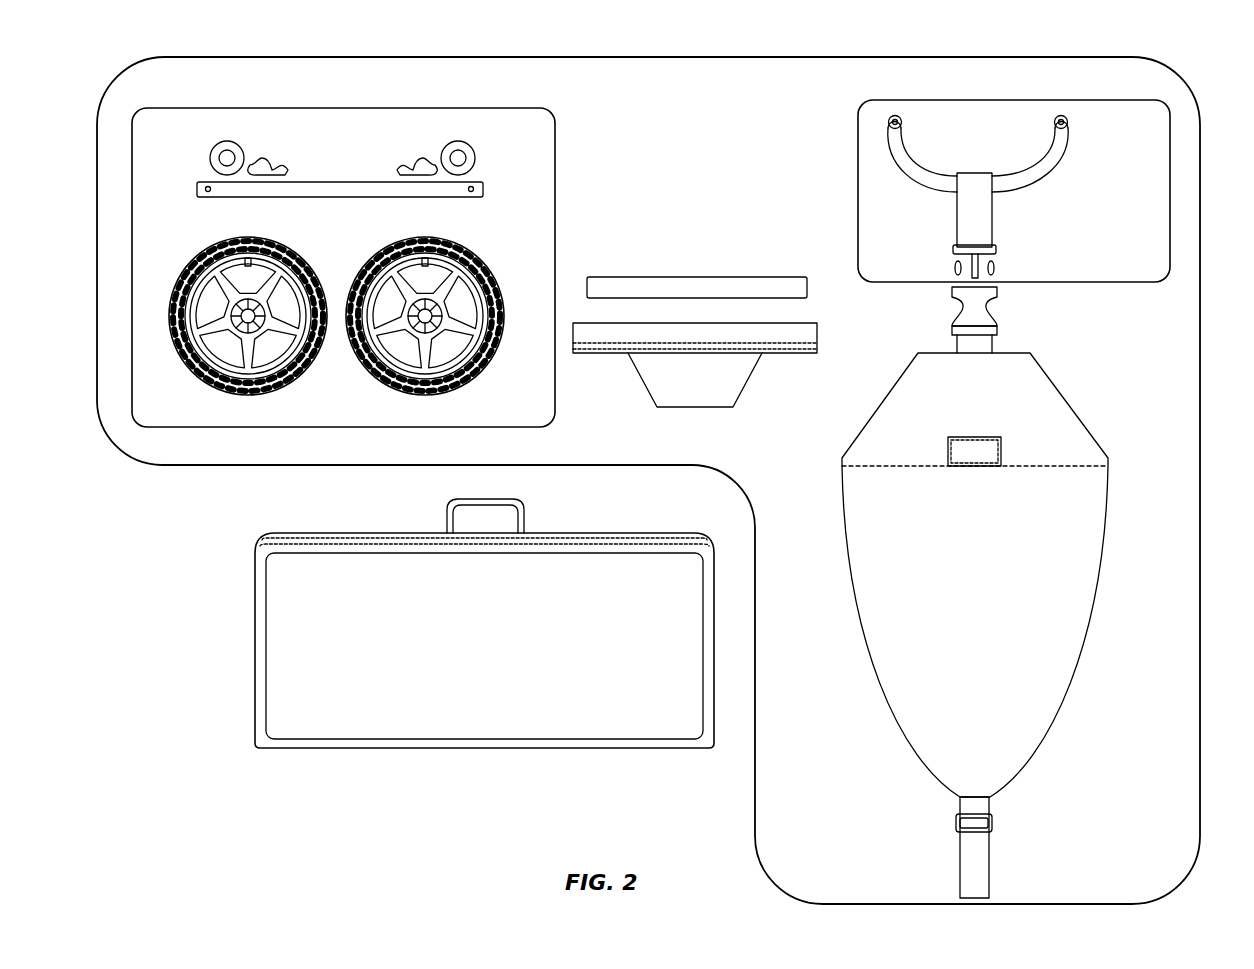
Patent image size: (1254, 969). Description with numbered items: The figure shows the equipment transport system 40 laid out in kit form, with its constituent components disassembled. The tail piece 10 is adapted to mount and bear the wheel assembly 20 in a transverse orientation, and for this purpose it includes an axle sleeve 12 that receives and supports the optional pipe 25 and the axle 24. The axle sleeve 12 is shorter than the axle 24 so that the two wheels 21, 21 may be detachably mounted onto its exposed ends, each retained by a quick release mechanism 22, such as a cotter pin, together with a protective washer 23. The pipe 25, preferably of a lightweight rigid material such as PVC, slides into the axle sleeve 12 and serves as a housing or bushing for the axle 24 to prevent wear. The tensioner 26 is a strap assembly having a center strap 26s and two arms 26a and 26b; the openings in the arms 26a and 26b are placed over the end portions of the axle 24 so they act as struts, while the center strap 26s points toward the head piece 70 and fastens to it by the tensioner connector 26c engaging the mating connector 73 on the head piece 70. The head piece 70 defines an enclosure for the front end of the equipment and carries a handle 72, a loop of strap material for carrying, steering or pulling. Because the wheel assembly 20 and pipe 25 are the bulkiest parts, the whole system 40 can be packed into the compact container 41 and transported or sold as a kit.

The tail piece 10 is at (752, 373).
The axle sleeve 12 is at (817, 338).
The wheel assembly 20 is at (347, 108).
The wheels 21 is at (305, 365).
The quick release mechanism 22 is at (262, 157).
The protective washer 23 is at (210, 158).
The axle 24 is at (483, 189).
The optional pipe 25 is at (807, 288).
The tensioner 26 is at (1025, 100).
The arm 26a is at (910, 152).
The arm 26b is at (1062, 168).
The center strap 26s is at (993, 222).
The tensioner connector 26c is at (1000, 267).
The equipment transport system 40 is at (1200, 350).
The compact container 41 is at (462, 748).
The head piece 70 is at (1083, 640).
The handle 72 is at (989, 855).
The mating connector 73 is at (998, 327).